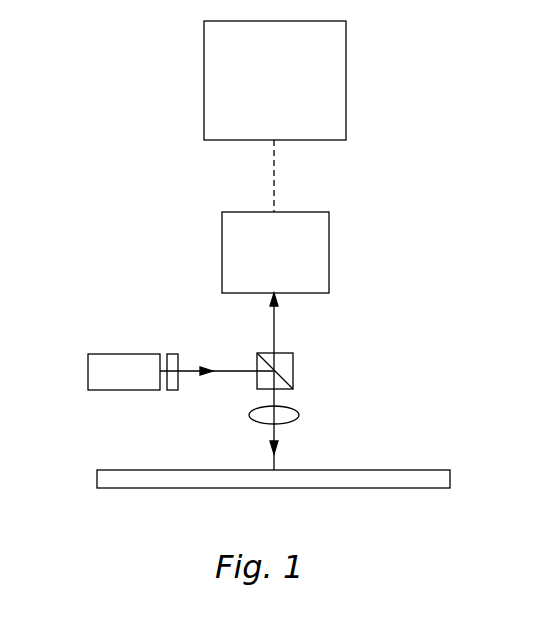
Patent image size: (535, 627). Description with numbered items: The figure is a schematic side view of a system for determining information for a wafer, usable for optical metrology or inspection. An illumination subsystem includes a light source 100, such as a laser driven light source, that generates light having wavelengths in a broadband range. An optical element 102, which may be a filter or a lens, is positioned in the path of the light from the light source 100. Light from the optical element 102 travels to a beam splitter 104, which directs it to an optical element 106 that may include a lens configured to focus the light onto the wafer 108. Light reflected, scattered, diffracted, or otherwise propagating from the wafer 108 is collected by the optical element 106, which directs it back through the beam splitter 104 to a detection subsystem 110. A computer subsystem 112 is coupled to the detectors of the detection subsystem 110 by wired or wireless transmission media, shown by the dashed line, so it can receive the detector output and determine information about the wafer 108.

The light source 100 is at (90, 366).
The optical element 102 is at (139, 358).
The beam splitter 104 is at (293, 371).
The optical element 106 is at (297, 418).
The wafer 108 is at (245, 465).
The detection subsystem 110 is at (240, 247).
The computer subsystem 112 is at (259, 117).